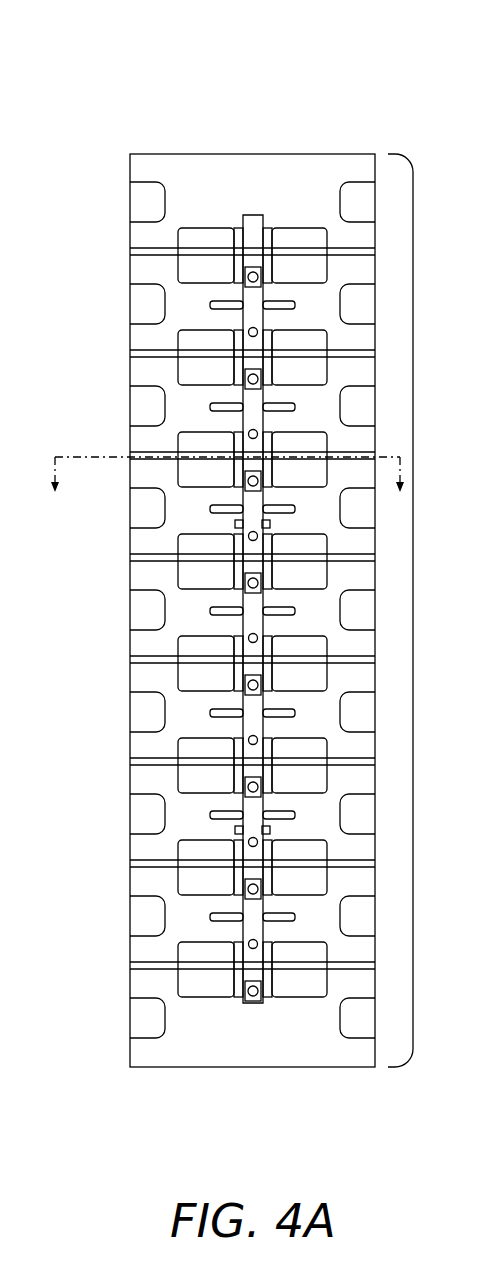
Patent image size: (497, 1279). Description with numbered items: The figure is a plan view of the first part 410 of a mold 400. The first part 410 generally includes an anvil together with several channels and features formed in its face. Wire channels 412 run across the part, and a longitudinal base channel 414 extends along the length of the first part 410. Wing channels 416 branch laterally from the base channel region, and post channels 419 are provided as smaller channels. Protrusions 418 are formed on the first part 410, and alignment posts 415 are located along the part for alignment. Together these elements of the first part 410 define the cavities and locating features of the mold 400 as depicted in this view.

The mold 400 is at (143, 75).
The first part 410 is at (413, 606).
The wire channels 412 is at (135, 248).
The longitudinal base channel 414 is at (253, 215).
The alignment posts 415 is at (135, 282).
The wing channels 416 is at (210, 303).
The protrusions 418 is at (233, 377).
The post channels 419 is at (262, 525).